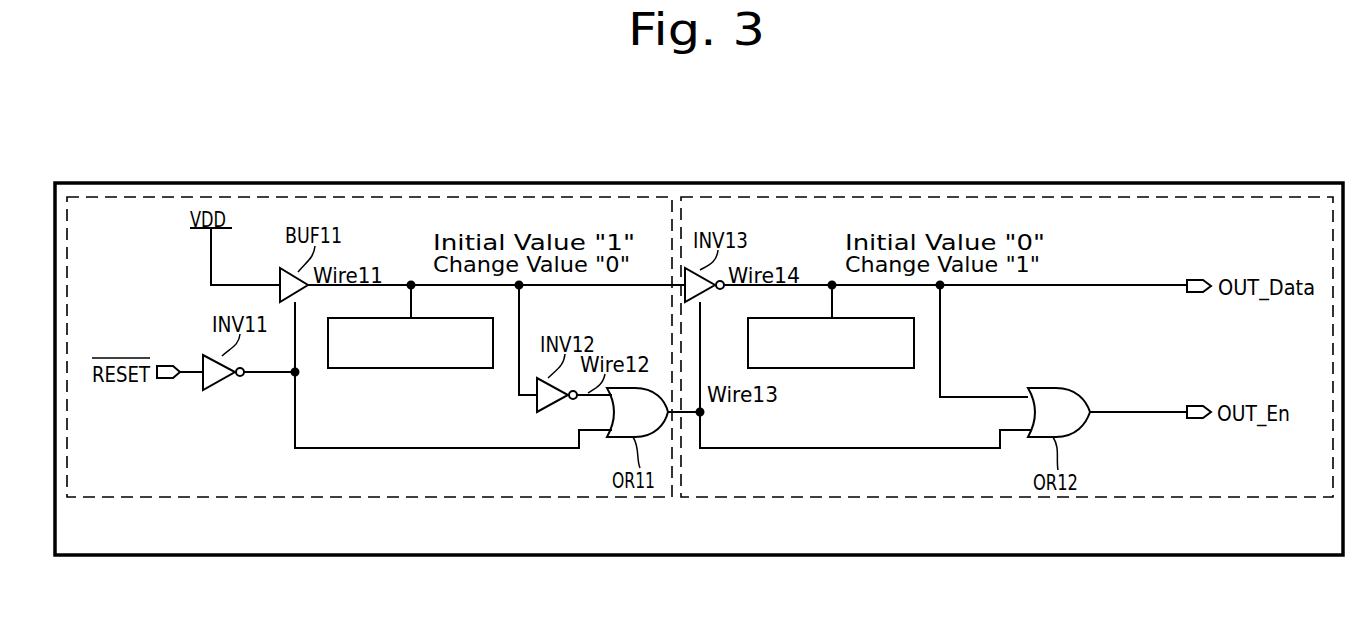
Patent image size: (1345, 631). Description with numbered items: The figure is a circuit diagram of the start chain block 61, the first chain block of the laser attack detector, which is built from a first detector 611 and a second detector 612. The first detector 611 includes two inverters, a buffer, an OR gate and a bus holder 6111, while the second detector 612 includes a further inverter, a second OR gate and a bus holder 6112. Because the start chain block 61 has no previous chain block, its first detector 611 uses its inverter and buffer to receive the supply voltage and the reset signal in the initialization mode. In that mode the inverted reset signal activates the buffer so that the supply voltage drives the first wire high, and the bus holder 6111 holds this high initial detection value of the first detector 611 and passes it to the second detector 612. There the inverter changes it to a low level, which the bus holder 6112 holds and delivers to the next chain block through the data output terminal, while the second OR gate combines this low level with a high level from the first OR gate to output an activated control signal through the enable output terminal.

The start chain block 61 is at (1265, 183).
The first detector 611 is at (622, 197).
The second detector 612 is at (1150, 197).
The bus holder 6111 is at (410, 368).
The bus holder 6112 is at (857, 368).